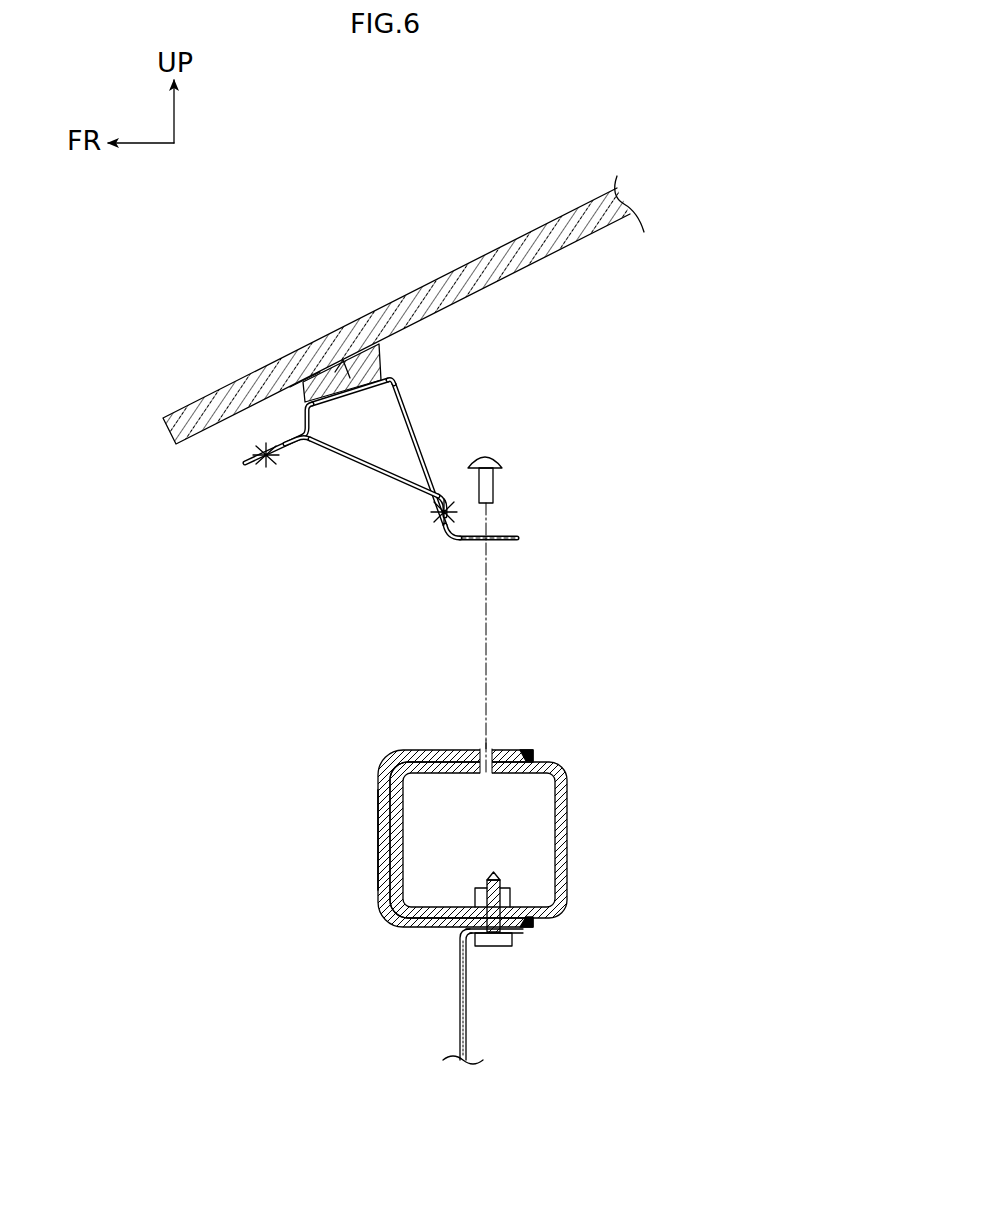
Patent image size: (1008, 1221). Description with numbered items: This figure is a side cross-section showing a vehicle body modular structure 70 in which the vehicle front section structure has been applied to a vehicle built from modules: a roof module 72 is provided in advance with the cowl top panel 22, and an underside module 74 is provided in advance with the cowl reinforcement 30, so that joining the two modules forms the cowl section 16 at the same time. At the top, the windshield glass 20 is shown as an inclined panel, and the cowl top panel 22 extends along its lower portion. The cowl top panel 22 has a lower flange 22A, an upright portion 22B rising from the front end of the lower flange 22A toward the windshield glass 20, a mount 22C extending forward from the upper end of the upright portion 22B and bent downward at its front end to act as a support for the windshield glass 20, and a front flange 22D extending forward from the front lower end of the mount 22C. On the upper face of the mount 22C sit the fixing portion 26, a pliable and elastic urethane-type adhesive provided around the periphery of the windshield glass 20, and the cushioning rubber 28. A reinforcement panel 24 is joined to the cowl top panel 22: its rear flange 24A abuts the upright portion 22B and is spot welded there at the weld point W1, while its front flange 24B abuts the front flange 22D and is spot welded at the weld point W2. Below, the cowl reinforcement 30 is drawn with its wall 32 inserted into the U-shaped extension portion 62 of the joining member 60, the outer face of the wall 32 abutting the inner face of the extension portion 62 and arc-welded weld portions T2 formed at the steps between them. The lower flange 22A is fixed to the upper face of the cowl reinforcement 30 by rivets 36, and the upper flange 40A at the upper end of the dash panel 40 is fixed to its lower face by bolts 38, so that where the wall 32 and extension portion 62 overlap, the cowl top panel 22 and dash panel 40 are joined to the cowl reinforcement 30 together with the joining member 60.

The cowl section 16 is at (586, 361).
The windshield glass 20 is at (478, 258).
The cowl top panel 22 is at (424, 447).
The lower flange 22A is at (505, 536).
The upright portion 22B is at (407, 412).
The mount 22C is at (357, 393).
The front flange 22D is at (246, 458).
The reinforcement panel 24 is at (368, 474).
The rear flange 24A is at (446, 528).
The front flange 24B is at (253, 472).
The fixing portion 26 is at (305, 394).
The cushioning rubber 28 is at (385, 366).
The cowl reinforcement 30 is at (571, 813).
The wall 32 is at (569, 840).
The rivets 36 is at (495, 459).
The bolts 38 is at (497, 947).
The dash panel 40 is at (459, 984).
The upper flange 40A is at (518, 934).
The joining member 60 is at (312, 840).
The extension portion 62 is at (378, 832).
The vehicle body modular structure 70 is at (764, 457).
The roof module 72 is at (662, 350).
The underside module 74 is at (693, 855).
The weld portions T2 is at (535, 755).
The weld point W1 is at (440, 516).
The weld point W2 is at (266, 458).